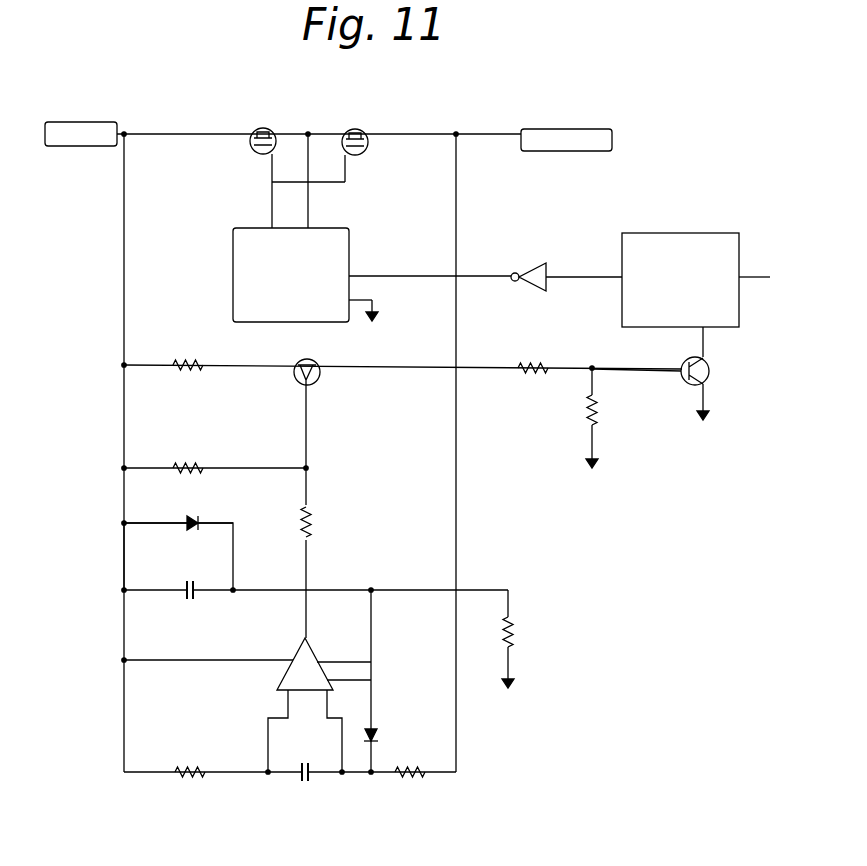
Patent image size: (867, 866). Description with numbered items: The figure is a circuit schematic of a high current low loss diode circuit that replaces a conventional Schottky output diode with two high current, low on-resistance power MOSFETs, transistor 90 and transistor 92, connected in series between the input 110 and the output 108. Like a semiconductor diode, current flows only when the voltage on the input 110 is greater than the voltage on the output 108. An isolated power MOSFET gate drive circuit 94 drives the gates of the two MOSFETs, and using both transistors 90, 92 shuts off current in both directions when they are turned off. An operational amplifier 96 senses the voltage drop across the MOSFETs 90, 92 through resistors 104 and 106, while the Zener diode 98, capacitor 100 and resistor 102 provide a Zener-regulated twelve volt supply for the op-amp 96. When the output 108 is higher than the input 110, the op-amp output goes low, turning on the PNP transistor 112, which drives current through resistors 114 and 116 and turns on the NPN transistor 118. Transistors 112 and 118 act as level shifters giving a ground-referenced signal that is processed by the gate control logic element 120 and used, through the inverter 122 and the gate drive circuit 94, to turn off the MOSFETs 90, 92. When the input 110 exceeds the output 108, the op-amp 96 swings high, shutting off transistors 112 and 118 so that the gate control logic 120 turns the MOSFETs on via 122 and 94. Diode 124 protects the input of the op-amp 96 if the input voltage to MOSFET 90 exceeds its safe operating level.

The input 110 is at (110, 123).
The transistor 90 is at (256, 132).
The transistor 92 is at (358, 128).
The output 108 is at (598, 128).
The isolated power MOSFET gate drive circuit 94 is at (350, 240).
The inverter 122 is at (556, 258).
The gate control logic element 120 is at (679, 233).
The PNP transistor 112 is at (315, 362).
The resistor 116 is at (540, 334).
The resistor 114 is at (562, 418).
The NPN transistor 118 is at (709, 372).
The Zener diode 98 is at (200, 522).
The capacitor 100 is at (202, 587).
The operational amplifier 96 is at (316, 652).
The resistor 102 is at (548, 636).
The diode 124 is at (379, 718).
The resistor 104 is at (185, 790).
The resistor 106 is at (400, 806).